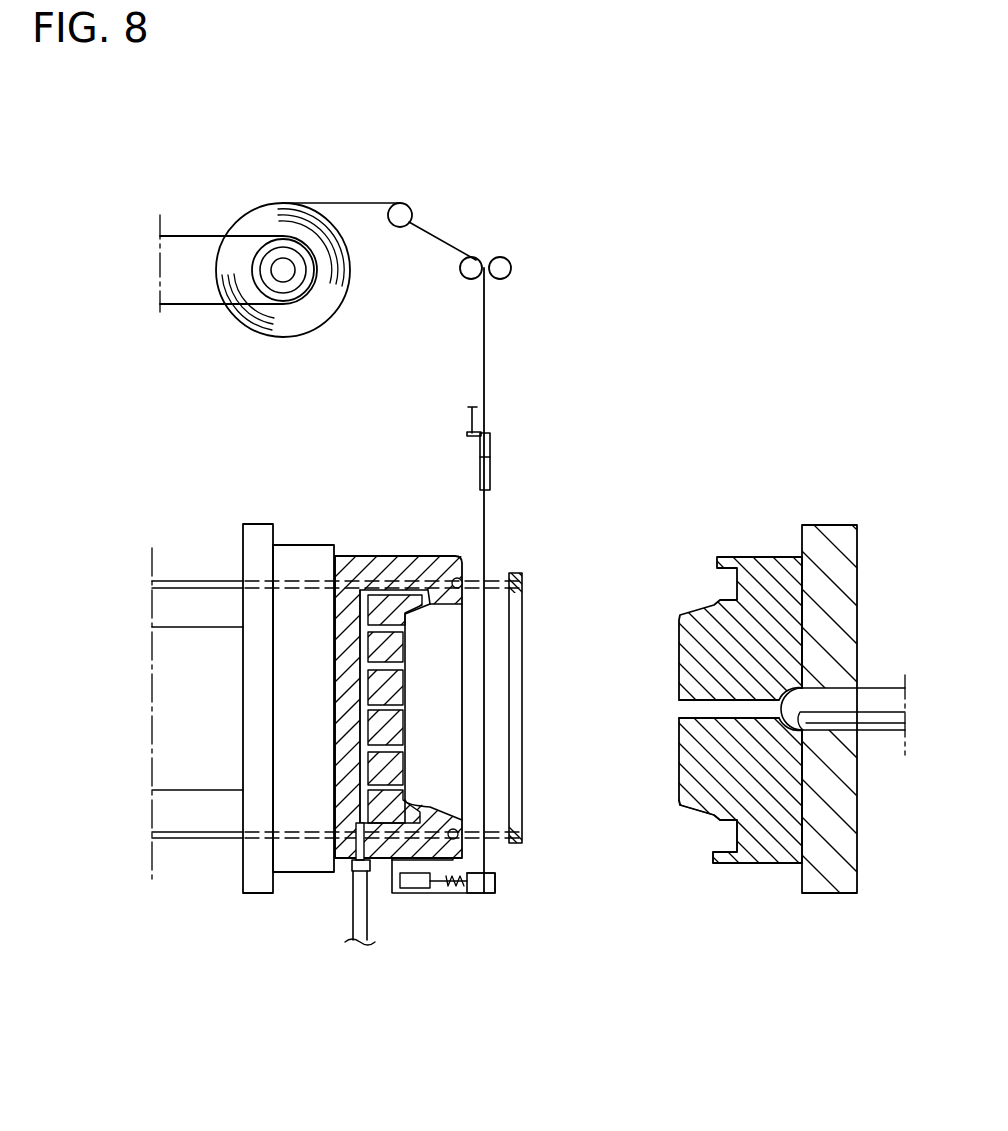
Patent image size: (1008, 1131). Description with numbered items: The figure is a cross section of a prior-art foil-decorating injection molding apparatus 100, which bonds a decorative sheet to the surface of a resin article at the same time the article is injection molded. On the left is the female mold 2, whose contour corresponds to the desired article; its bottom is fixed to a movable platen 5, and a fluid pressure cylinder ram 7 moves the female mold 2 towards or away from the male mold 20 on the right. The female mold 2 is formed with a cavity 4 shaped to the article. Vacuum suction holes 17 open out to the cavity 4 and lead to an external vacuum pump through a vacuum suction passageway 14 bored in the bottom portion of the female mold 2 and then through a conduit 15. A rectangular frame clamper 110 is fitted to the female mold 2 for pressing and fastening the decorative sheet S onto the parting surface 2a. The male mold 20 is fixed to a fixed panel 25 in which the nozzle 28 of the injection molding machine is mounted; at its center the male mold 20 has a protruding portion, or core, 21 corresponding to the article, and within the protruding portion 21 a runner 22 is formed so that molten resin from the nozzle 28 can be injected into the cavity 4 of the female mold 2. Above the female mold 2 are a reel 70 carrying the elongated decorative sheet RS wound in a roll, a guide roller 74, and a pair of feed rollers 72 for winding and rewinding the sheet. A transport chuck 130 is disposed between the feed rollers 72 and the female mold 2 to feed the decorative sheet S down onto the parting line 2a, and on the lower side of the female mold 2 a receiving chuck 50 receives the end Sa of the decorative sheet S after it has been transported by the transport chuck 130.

The foil-decorating injection molding apparatus 100 is at (598, 292).
The decorative sheet wound in a roll RS is at (263, 218).
The reel 70 is at (186, 289).
The guide roller 74 is at (397, 202).
The feed rollers 72 is at (497, 257).
The decorative sheet S is at (484, 526).
The transport chuck 130 is at (494, 469).
The rectangular frame clamper 110 is at (522, 583).
The fluid pressure cylinder ram 7 is at (200, 637).
The movable platen 5 is at (301, 558).
The female mold 2 is at (397, 553).
The parting surface 2a is at (462, 822).
The cavity 4 is at (405, 686).
The vacuum suction holes 17 is at (362, 670).
The vacuum suction passageway 14 is at (356, 743).
The conduit 15 is at (353, 916).
The receiving chuck 50 is at (500, 890).
The end of the decorative sheet Sa is at (478, 893).
The male mold 20 is at (758, 556).
The protruding portion (core) 21 is at (678, 762).
The runner 22 is at (678, 710).
The fixed panel 25 is at (828, 535).
The nozzle 28 is at (882, 722).